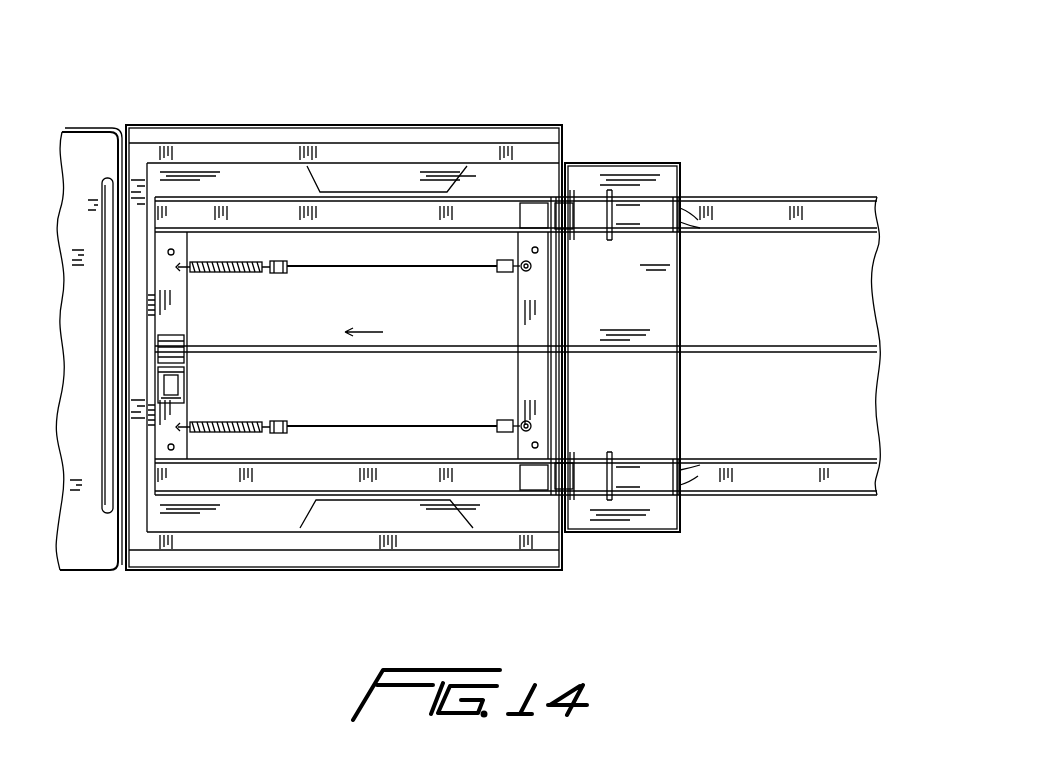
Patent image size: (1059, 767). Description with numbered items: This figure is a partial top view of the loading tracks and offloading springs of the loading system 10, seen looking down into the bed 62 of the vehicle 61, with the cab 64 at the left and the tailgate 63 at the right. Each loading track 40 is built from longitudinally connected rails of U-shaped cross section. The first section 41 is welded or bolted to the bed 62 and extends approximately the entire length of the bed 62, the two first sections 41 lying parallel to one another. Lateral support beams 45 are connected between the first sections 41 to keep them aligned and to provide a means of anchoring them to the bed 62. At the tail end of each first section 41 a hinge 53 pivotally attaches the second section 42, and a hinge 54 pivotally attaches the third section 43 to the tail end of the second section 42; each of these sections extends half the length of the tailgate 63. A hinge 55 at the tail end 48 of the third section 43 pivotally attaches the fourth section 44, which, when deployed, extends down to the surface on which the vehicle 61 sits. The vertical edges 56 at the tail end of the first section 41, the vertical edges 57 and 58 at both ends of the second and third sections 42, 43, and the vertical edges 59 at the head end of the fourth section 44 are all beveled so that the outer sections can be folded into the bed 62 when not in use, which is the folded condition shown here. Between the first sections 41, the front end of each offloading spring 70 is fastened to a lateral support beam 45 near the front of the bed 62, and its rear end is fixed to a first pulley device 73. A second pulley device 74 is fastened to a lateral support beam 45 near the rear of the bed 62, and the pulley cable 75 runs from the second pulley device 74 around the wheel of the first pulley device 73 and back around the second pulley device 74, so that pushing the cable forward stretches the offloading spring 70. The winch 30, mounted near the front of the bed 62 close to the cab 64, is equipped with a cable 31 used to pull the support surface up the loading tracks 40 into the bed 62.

The loading system 10 is at (831, 71).
The winch 30 is at (192, 382).
The cable 31 is at (777, 348).
The loading track 40 is at (835, 158).
The first section 41 is at (390, 215).
The second section 42 is at (583, 210).
The third section 43 is at (634, 212).
The fourth section 44 is at (827, 223).
The lateral support beam 45 is at (178, 312).
The tail end 48 is at (700, 205).
The hinge 53 is at (555, 200).
The hinge 54 is at (610, 235).
The hinge 55 is at (697, 224).
The vertical edges 56 is at (530, 212).
The vertical edges 57 is at (573, 205).
The vertical edges 58 is at (625, 220).
The vertical edges 59 is at (765, 200).
The vehicle 61 is at (82, 598).
The bed 62 is at (203, 573).
The tailgate 63 is at (612, 327).
The cab 64 is at (85, 138).
The offloading spring 70 is at (222, 262).
The first pulley device 73 is at (283, 261).
The second pulley device 74 is at (503, 268).
The pulley cable 75 is at (393, 267).